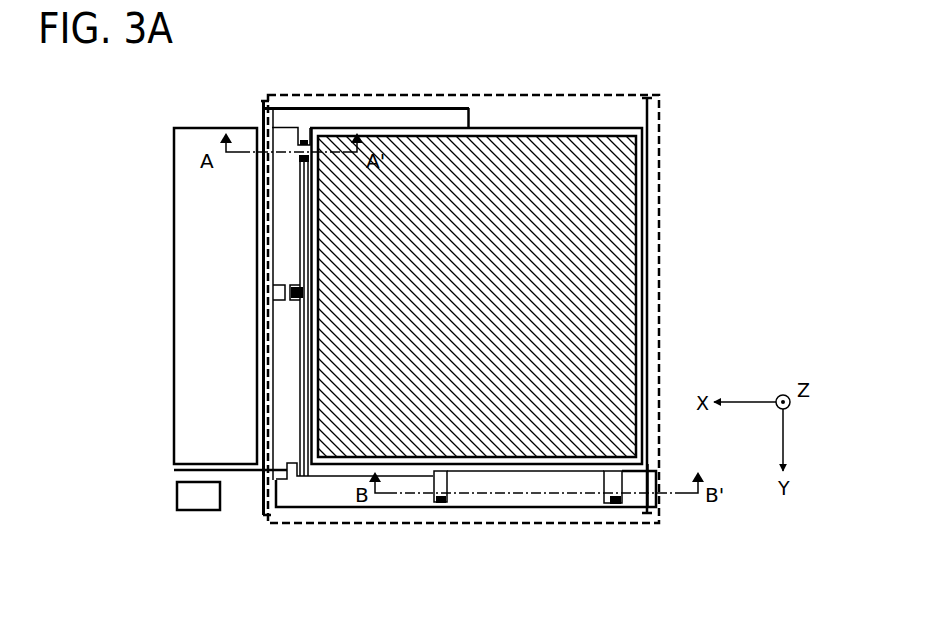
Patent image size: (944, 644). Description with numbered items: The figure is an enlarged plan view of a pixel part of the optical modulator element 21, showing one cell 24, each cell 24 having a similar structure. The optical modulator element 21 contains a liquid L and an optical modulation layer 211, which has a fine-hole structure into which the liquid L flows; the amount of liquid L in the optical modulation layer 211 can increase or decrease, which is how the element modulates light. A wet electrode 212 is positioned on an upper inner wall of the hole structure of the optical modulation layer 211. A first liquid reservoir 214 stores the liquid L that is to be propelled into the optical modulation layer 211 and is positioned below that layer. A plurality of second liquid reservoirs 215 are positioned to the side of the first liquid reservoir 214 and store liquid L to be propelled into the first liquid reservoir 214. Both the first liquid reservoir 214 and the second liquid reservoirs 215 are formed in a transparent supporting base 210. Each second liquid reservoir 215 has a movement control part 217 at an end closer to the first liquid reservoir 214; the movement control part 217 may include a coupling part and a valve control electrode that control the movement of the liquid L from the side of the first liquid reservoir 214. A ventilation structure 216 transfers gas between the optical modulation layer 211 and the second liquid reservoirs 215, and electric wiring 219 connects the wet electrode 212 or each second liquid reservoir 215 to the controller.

The optical modulator element 21 is at (466, 42).
The cell 24 is at (560, 86).
The transparent supporting base 210 is at (553, 124).
The optical modulation layer 211 is at (650, 138).
The wet electrode 212 is at (637, 198).
The first liquid reservoir 214 is at (649, 277).
The second liquid reservoir 215 is at (285, 127).
The ventilation structure 216 is at (658, 502).
The movement control part 217 is at (296, 158).
The electric wiring 219 is at (260, 106).
The liquid L is at (480, 304).